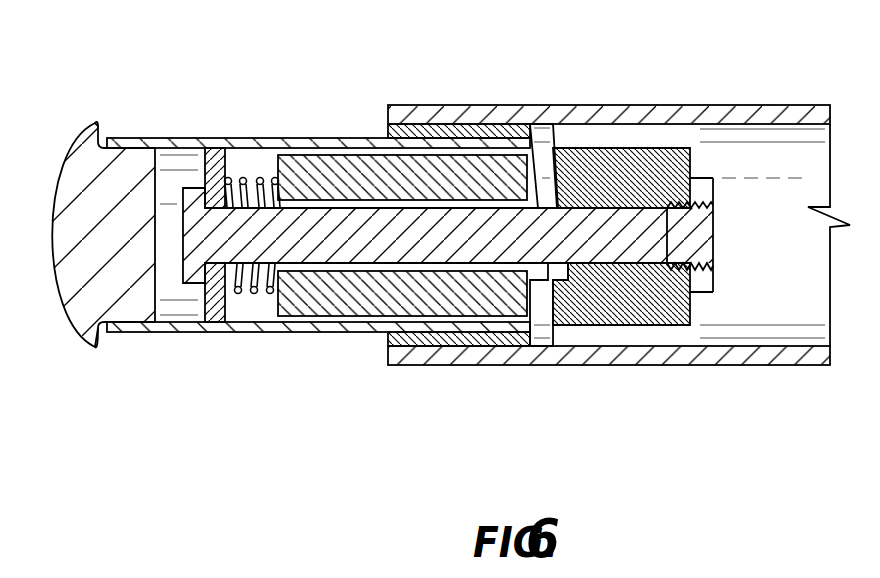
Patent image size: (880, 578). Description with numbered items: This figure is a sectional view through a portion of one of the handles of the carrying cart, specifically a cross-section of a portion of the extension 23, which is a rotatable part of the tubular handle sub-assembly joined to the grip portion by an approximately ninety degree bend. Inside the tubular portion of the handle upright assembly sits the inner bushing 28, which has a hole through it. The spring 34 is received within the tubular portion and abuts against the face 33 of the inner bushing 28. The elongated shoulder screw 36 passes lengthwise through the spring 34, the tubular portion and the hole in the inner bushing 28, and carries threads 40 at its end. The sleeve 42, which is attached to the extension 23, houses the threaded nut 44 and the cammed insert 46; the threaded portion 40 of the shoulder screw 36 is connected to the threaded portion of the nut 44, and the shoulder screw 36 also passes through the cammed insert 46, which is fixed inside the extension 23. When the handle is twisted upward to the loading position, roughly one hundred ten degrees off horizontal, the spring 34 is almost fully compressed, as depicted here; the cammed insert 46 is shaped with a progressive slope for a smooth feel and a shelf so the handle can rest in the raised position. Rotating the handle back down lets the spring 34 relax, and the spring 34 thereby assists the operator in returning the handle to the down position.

The extension 23 is at (707, 117).
The inner bushing 28 is at (408, 300).
The face 33 is at (278, 167).
The spring 34 is at (245, 178).
The elongated shoulder screw 36 is at (355, 207).
The threads 40 is at (690, 225).
The sleeve 42 is at (680, 365).
The threaded nut 44 is at (708, 278).
The cammed insert 46 is at (673, 300).